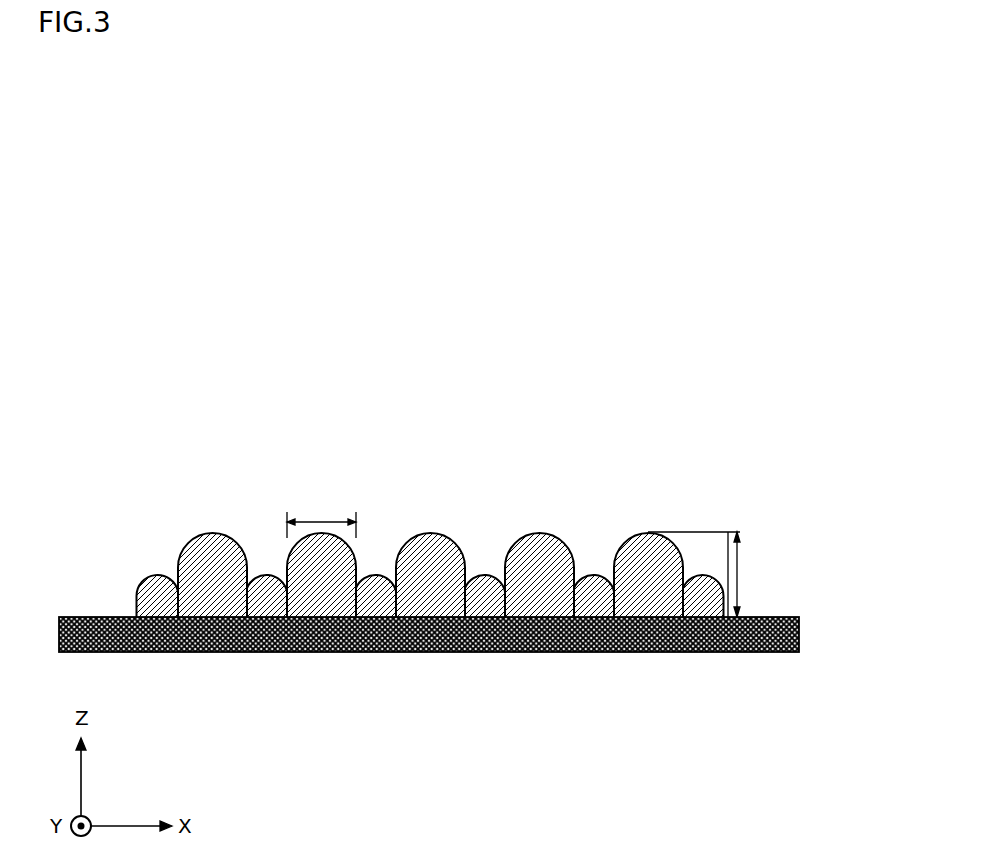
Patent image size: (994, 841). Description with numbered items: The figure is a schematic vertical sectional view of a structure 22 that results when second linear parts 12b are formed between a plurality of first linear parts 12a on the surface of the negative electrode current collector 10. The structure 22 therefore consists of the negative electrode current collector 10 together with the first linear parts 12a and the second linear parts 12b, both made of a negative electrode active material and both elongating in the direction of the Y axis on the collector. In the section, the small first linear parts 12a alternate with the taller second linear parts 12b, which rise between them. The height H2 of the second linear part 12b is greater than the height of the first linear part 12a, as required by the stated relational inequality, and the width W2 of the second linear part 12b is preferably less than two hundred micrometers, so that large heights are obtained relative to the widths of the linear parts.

The negative electrode current collector 10 is at (800, 650).
The structure 22 is at (702, 472).
The first linear part 12a is at (702, 605).
The second linear part 12b is at (640, 592).
The width of the second linear part W2 is at (321, 513).
The height of the second linear part H2 is at (711, 574).